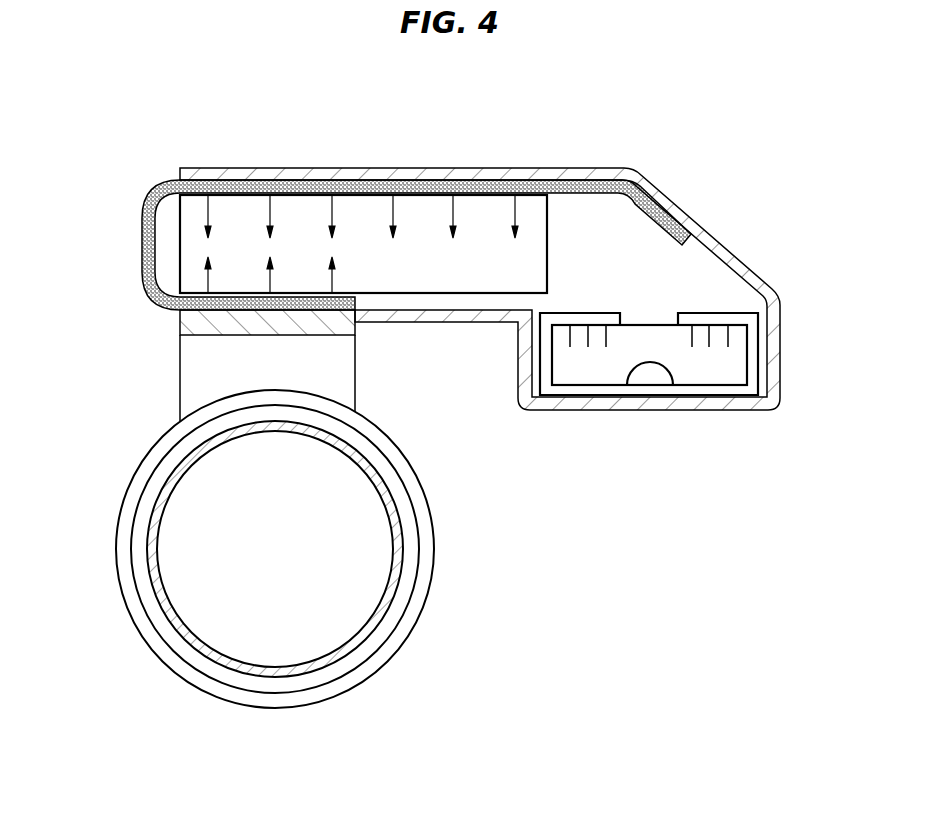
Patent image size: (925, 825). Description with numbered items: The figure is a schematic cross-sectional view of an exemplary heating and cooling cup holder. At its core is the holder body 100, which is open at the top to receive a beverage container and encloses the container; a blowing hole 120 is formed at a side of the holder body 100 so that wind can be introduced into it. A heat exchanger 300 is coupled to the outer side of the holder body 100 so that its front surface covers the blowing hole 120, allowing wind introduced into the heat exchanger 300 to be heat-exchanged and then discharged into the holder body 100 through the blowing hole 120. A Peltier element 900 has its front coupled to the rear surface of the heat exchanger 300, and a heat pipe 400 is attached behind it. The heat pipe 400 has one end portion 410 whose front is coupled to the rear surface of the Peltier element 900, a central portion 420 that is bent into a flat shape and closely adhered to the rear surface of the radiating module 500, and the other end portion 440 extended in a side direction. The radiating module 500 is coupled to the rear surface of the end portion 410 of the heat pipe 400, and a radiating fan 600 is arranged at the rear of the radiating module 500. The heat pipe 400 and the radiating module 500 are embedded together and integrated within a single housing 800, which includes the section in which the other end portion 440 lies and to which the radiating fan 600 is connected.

The heat pipe 400 is at (153, 201).
The central portion 420 is at (344, 187).
The second end portion 440 is at (665, 192).
The housing 800 is at (720, 258).
The radiating module 500 is at (490, 195).
The first end portion 410 is at (320, 297).
The Peltier element 900 is at (188, 322).
The heat exchanger 300 is at (192, 377).
The holder body 100 is at (397, 570).
The blowing hole 120 is at (280, 426).
The radiating fan 600 is at (698, 372).